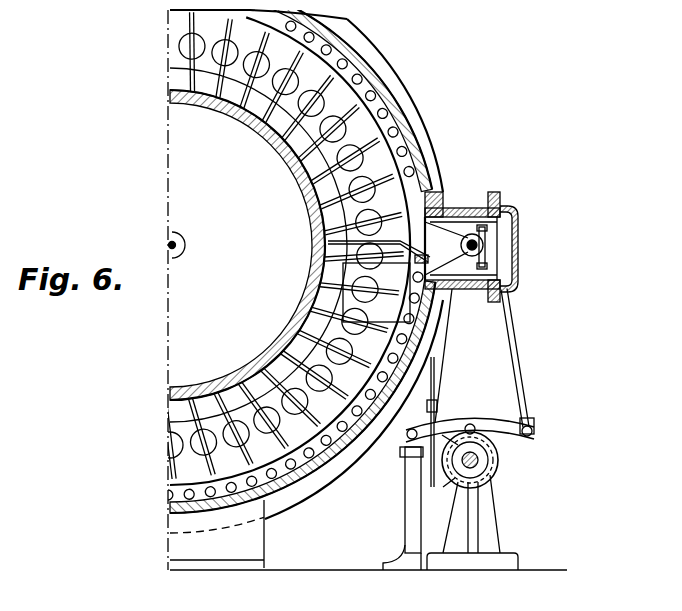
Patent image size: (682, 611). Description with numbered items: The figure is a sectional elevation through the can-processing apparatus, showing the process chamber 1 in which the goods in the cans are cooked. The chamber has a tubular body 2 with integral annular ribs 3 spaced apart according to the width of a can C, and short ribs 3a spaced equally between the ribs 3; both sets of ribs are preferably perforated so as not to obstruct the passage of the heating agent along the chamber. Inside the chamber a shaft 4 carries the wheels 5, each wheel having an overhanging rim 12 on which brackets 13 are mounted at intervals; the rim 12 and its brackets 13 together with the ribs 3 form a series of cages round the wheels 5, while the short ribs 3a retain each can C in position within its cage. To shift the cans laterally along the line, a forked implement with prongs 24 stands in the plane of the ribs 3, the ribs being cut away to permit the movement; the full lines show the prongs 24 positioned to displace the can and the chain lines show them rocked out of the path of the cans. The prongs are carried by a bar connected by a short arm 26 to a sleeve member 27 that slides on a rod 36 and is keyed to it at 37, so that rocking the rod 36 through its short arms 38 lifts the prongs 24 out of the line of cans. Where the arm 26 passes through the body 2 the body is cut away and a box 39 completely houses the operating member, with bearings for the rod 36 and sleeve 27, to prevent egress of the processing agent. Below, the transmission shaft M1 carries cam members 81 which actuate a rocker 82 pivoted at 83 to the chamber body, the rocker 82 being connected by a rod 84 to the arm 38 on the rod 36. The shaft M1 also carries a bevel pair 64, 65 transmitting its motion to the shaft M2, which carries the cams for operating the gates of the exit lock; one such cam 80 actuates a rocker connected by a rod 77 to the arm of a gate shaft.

The process chamber 1 is at (368, 290).
The tubular body 2 is at (345, 17).
The annular ribs 3 is at (176, 27).
The short ribs 3a is at (387, 90).
The shaft 4 is at (169, 244).
The wheels 5 is at (199, 290).
The overhanging rims 12 is at (286, 152).
The brackets 13 is at (188, 77).
The prongs 24 is at (326, 262).
The can C is at (326, 247).
The arm 26 is at (452, 256).
The sleeve member 27 is at (470, 237).
The rod 36 is at (516, 262).
The key 37 is at (474, 236).
The short arms 38 is at (487, 246).
The box 39 is at (505, 206).
The bevel gear 64 is at (493, 477).
The bevel gear 65 is at (452, 483).
The rod 77 is at (435, 370).
The cam 80 is at (427, 484).
The cam members 81 is at (497, 442).
The rockers 82 is at (470, 423).
The pivot 83 is at (406, 448).
The rod 84 is at (515, 333).
The transmission shaft M1 is at (483, 463).
The shaft M2 is at (373, 463).